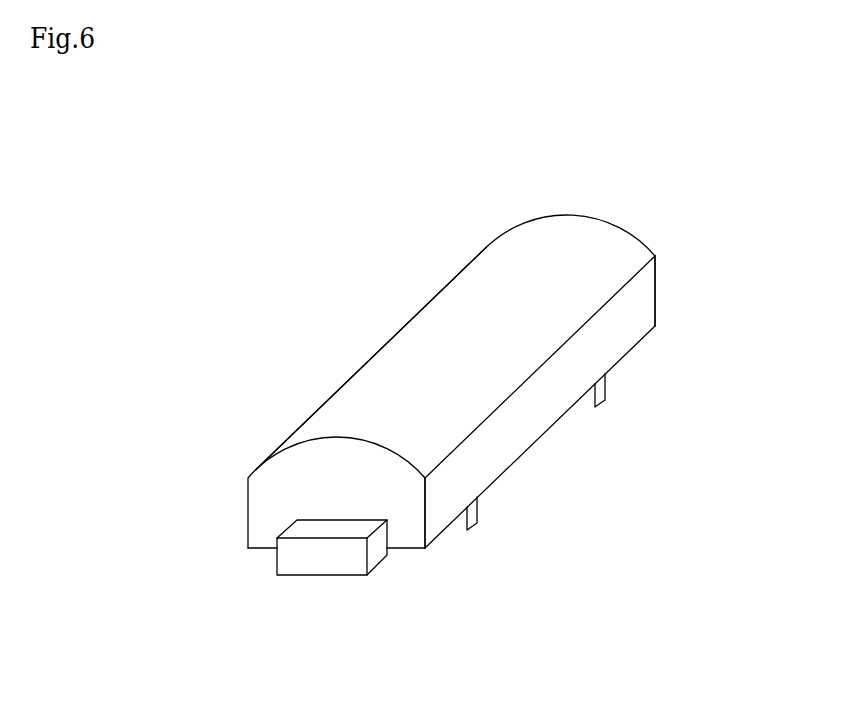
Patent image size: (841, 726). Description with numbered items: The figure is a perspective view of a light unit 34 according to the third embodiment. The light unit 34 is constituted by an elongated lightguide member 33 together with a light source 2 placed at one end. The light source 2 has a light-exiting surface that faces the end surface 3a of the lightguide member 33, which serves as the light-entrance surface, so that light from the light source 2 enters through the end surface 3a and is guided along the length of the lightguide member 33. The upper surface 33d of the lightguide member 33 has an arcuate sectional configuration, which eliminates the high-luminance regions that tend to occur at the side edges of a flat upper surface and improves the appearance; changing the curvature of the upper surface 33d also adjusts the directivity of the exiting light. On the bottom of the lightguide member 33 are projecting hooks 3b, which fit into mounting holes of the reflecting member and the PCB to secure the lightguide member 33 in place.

The light source 2 is at (318, 560).
The end surface 3a is at (410, 522).
The projecting hooks 3b is at (478, 530).
The lightguide member 33 is at (352, 282).
The upper surface 33d is at (422, 310).
The light unit 34 is at (693, 207).